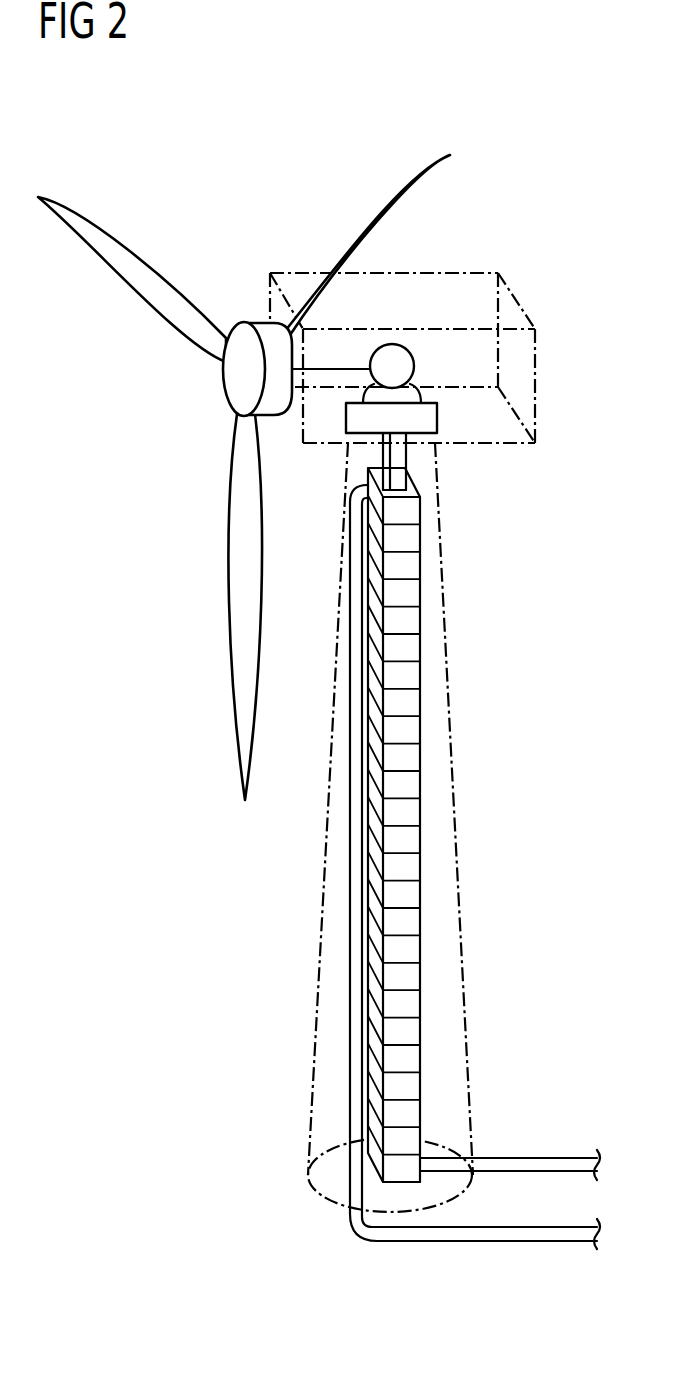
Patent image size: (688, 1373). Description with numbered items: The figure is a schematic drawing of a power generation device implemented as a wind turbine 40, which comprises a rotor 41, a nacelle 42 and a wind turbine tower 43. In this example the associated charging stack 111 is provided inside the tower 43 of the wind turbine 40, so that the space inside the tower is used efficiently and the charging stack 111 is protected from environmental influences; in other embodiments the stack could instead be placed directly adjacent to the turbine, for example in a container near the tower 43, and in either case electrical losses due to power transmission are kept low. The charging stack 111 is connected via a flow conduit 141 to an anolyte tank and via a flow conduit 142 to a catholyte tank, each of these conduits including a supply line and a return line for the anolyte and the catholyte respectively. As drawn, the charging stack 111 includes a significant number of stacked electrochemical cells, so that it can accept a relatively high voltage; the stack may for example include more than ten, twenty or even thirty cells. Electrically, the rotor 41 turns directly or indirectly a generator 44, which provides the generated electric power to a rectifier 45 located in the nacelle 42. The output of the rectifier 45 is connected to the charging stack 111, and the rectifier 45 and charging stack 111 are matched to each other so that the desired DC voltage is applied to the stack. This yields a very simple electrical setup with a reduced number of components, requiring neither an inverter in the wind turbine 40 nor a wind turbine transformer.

The wind turbine 40 is at (98, 118).
The rotor 41 is at (222, 394).
The nacelle 42 is at (517, 300).
The wind turbine tower 43 is at (498, 908).
The generator 44 is at (392, 345).
The rectifier 45 is at (480, 472).
The charging stack 111 is at (468, 750).
The flow conduit 141 is at (532, 1158).
The flow conduit 142 is at (503, 1272).